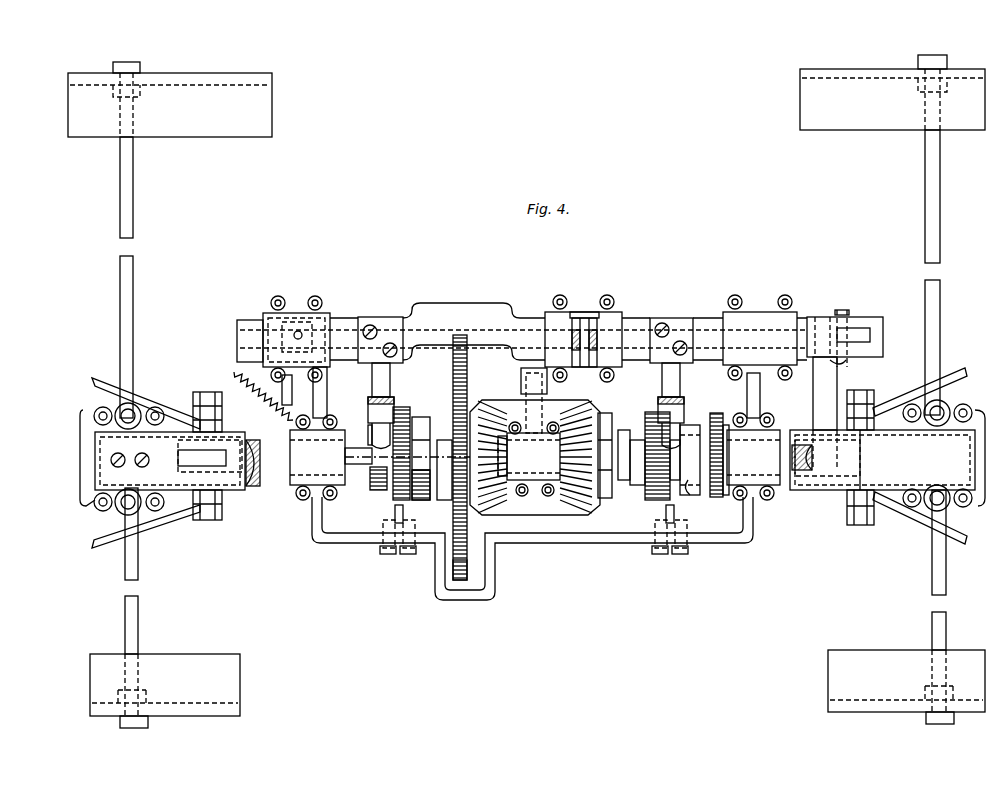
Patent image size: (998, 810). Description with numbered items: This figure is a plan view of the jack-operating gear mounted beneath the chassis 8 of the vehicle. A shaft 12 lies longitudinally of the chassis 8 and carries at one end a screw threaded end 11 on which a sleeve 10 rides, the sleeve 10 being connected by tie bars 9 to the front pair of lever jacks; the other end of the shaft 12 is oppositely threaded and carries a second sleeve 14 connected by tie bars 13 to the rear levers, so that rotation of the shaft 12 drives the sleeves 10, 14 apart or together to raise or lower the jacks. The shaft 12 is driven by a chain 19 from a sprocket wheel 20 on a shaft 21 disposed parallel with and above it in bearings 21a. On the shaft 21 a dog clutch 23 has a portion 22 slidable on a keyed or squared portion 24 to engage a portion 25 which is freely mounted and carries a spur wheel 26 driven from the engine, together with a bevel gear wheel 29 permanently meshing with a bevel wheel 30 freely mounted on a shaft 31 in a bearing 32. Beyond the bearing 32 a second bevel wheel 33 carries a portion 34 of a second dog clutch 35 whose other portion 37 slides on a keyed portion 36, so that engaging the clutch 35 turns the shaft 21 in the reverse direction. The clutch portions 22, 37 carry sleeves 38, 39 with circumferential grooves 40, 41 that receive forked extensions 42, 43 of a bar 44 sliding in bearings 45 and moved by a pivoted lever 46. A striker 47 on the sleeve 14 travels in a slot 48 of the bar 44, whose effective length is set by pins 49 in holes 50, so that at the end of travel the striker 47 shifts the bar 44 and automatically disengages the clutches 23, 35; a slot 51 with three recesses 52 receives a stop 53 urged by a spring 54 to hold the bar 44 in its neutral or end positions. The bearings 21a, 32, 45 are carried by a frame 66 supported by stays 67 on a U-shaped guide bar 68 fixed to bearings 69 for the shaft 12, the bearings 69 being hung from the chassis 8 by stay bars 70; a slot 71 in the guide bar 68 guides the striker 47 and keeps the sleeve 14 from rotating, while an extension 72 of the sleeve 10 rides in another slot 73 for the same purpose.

The chassis 8 is at (888, 126).
The tie bars 9 is at (174, 402).
The sleeve 10 is at (222, 502).
The screw threaded end 11 is at (256, 486).
The shaft 12 is at (90, 430).
The tie bars 13 is at (887, 392).
The sleeve 14 is at (826, 488).
The chain 19 is at (727, 496).
The sprocket wheel 20 is at (714, 498).
The shaft 21 is at (290, 448).
The bearings 21a is at (535, 457).
The portion of dog clutch 22 is at (410, 430).
The dog clutch 23 is at (432, 458).
The keyed or squared portion 24 is at (407, 455).
The portion of dog clutch 25 is at (453, 420).
The spur wheel 26 is at (470, 576).
The bevel gear wheel 29 is at (502, 500).
The bevel wheel 30 is at (494, 400).
The shaft 31 is at (548, 385).
The bearing 32 is at (535, 457).
The second bevel wheel 33 is at (580, 500).
The portion of dog clutch 34 is at (605, 413).
The dog clutch 35 is at (631, 457).
The keyed or squared portion 36 is at (693, 460).
The portion of clutch 37 is at (652, 412).
The sleeve 38 is at (370, 428).
The sleeve 39 is at (680, 428).
The circumferential groove 40 is at (378, 492).
The circumferential groove 41 is at (695, 490).
The forked extension 42 is at (388, 317).
The forked extension 43 is at (668, 318).
The bar 44 is at (240, 320).
The bearings 45 is at (290, 318).
The pivoted lever 46 is at (575, 334).
The striker 47 is at (822, 316).
The slot 48 is at (862, 328).
The pins 49 is at (842, 308).
The holes 50 is at (847, 365).
The slot 51 is at (263, 340).
The recesses 52 is at (268, 334).
The stop 53 is at (303, 330).
The spring 54 is at (258, 402).
The frame 66 is at (326, 392).
The stays 67 is at (282, 383).
The U-shaped guide bar 68 is at (190, 490).
The bearings 69 is at (100, 508).
The stay bars 70 is at (134, 342).
The slot 71 is at (806, 488).
The extension 72 is at (196, 428).
The slot 73 is at (230, 458).